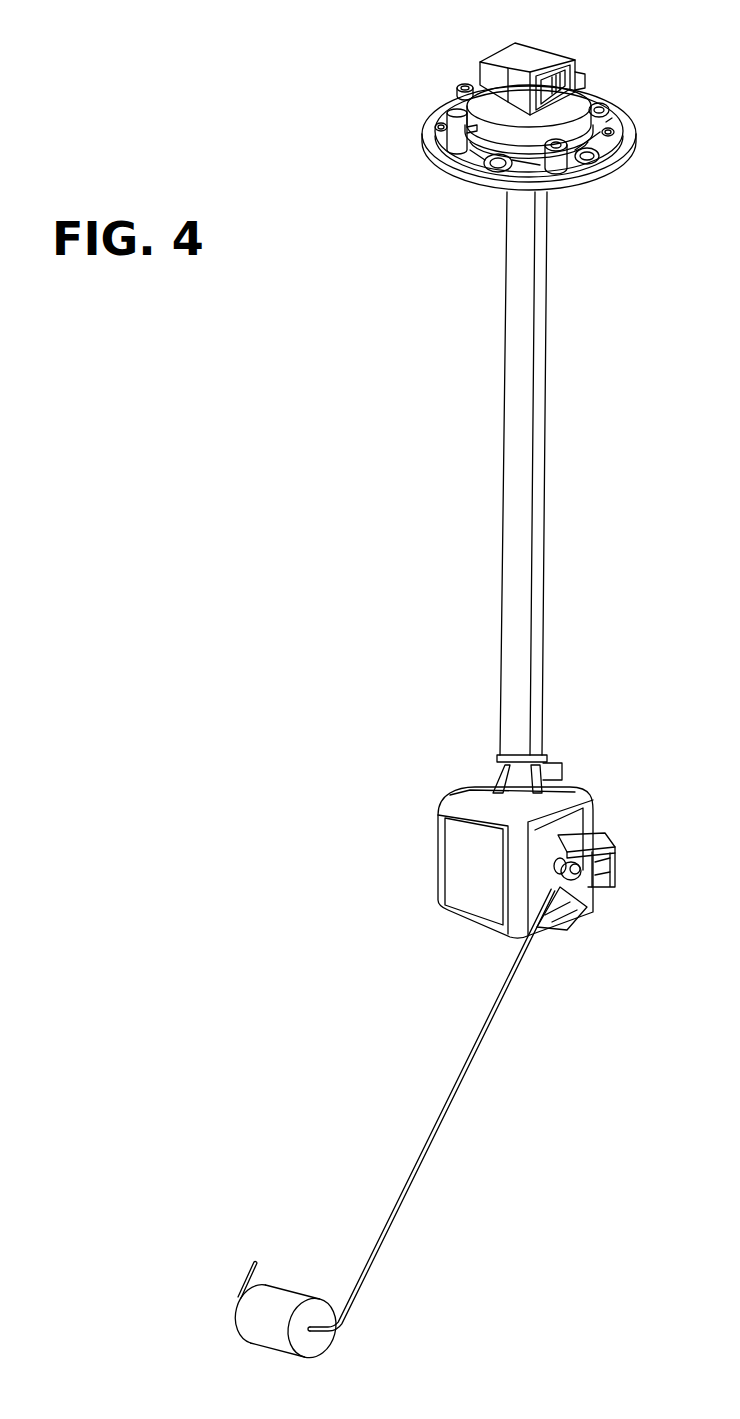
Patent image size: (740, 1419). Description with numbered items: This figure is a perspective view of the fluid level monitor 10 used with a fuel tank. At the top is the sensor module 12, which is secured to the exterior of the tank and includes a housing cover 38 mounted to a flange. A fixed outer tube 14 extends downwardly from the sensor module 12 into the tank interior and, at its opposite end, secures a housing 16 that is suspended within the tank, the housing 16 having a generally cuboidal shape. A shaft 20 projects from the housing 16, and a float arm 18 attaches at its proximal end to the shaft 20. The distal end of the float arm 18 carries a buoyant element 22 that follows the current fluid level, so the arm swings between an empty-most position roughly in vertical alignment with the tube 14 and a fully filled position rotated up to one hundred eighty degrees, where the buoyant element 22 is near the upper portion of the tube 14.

The fluid level monitor 10 is at (334, 520).
The sensor module 12 is at (450, 80).
The tube 14 is at (503, 434).
The housing 16 is at (452, 848).
The float arm 18 is at (440, 1116).
The shaft 20 is at (553, 862).
The buoyant element 22 is at (289, 1300).
The housing cover 38 is at (459, 83).